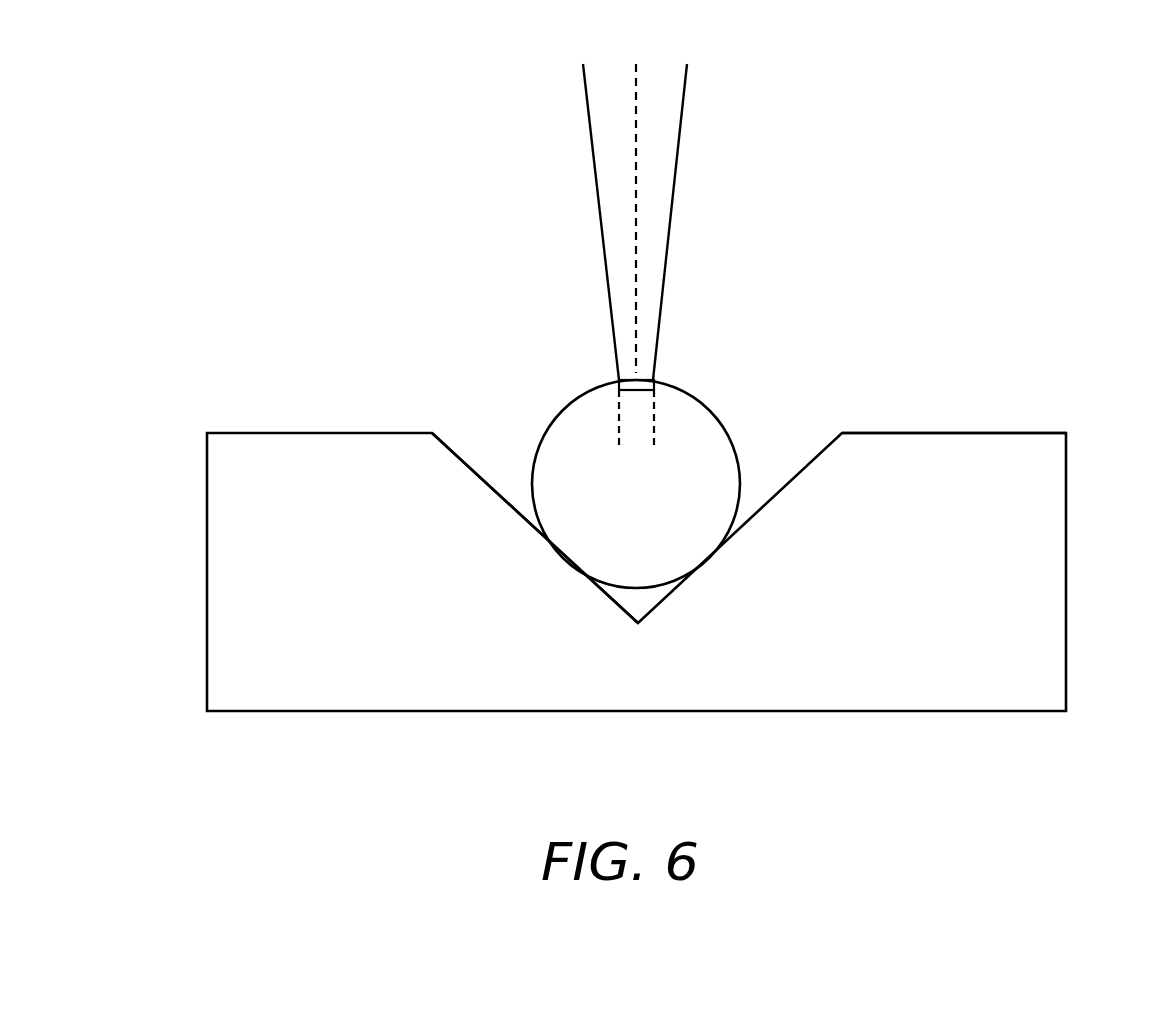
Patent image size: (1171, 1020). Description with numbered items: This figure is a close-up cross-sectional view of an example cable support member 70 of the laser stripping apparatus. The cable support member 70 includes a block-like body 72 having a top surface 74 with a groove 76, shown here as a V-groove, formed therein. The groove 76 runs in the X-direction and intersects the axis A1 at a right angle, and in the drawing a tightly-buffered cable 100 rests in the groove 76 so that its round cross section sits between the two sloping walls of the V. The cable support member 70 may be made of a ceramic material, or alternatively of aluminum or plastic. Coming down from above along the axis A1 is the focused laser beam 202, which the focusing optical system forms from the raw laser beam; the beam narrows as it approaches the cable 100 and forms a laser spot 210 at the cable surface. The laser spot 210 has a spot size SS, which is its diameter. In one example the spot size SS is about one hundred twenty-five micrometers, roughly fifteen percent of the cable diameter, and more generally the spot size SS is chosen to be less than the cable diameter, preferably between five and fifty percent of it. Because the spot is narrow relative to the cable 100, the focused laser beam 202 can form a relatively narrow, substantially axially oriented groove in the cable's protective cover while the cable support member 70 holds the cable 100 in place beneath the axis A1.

The cable support member 70 is at (962, 340).
The block-like body 72 is at (920, 538).
The top surface 74 is at (980, 431).
The groove 76 is at (478, 440).
The tightly-buffered cable 100 is at (686, 365).
The focused laser beam 202 is at (576, 141).
The axis A1 is at (636, 102).
The laser spot 210 is at (617, 385).
The spot size SS is at (688, 413).